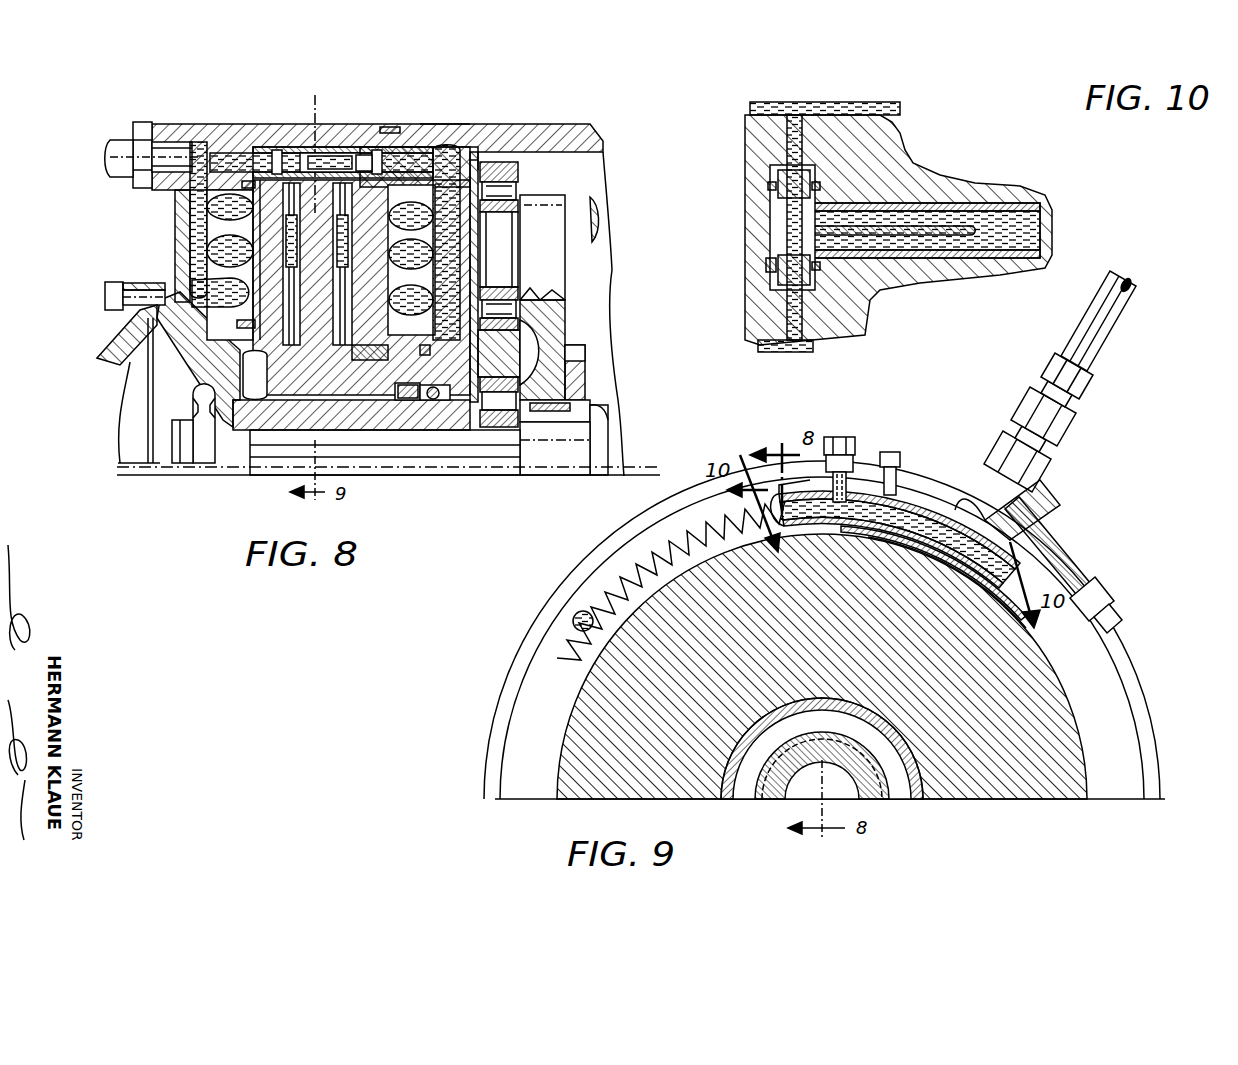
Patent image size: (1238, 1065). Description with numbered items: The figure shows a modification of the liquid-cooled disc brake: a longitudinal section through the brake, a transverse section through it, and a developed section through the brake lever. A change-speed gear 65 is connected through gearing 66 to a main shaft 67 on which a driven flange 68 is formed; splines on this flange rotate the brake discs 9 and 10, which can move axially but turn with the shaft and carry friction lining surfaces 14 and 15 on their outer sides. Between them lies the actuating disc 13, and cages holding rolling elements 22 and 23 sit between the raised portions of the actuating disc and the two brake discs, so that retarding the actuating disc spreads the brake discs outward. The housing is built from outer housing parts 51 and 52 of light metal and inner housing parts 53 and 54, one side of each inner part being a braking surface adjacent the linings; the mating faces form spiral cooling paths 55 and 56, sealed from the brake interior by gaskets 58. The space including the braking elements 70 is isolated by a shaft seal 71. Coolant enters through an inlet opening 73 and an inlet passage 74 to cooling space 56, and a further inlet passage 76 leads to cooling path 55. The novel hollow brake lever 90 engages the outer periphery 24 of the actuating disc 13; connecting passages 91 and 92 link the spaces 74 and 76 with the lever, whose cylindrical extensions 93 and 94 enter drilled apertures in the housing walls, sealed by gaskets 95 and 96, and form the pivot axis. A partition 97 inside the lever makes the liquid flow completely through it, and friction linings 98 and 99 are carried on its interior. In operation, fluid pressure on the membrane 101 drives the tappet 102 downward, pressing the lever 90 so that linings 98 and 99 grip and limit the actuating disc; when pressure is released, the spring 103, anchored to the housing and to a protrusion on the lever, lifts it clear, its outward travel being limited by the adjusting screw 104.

In FIG. 8, the brake disc 9 is at (395, 392).
In FIG. 8, the brake disc 10 is at (290, 388).
In FIG. 8, the actuating disc 13 is at (282, 160).
In FIG. 9, the actuating disc 13 is at (1032, 680).
In FIG. 8, the friction lining surface 14 is at (375, 362).
In FIG. 8, the friction lining surface 15 is at (255, 375).
In FIG. 8, the rolling elements 22 is at (339, 264).
In FIG. 8, the rolling elements 23 is at (297, 264).
In FIG. 9, the outer periphery of the actuating disc 24 is at (1098, 730).
In FIG. 8, the outer housing part 51 is at (480, 130).
In FIG. 8, the outer housing part 52 is at (160, 130).
In FIG. 8, the inner housing part 53 is at (398, 175).
In FIG. 8, the inner housing part 54 is at (228, 230).
In FIG. 8, the spiral cooling path 55 is at (420, 254).
In FIG. 8, the spiral cooling path 56 is at (222, 249).
In FIG. 8, the gaskets 58 is at (412, 136).
In FIG. 8, the change-speed gear 65 is at (580, 130).
In FIG. 8, the gearing 66 is at (575, 310).
In FIG. 8, the main shaft 67 is at (540, 452).
In FIG. 8, the driven flange 68 is at (128, 333).
In FIG. 8, the space including the braking elements 70 is at (415, 433).
In FIG. 8, the shaft seal 71 is at (432, 400).
In FIG. 8, the inlet opening 73 is at (118, 140).
In FIG. 8, the inlet passage 74 is at (195, 150).
In FIG. 8, the inlet passage 76 is at (480, 163).
In FIG. 10, the brake lever 90 is at (1040, 235).
In FIG. 9, the brake lever 90 is at (850, 495).
In FIG. 8, the connecting passage 91 is at (222, 160).
In FIG. 10, the connecting passage 91 is at (800, 316).
In FIG. 8, the connecting passage 92 is at (450, 135).
In FIG. 10, the connecting passage 92 is at (798, 128).
In FIG. 8, the cylindrical extension 93 is at (270, 160).
In FIG. 10, the cylindrical extension 93 is at (780, 282).
In FIG. 8, the cylindrical extension 94 is at (350, 165).
In FIG. 10, the cylindrical extension 94 is at (780, 182).
In FIG. 8, the gasket 95 is at (292, 162).
In FIG. 10, the gasket 95 is at (785, 276).
In FIG. 8, the gasket 96 is at (372, 168).
In FIG. 10, the gasket 96 is at (815, 180).
In FIG. 10, the partition 97 is at (975, 230).
In FIG. 9, the friction lining 98 is at (915, 520).
In FIG. 9, the friction lining 99 is at (1055, 556).
In FIG. 9, the membrane 101 is at (1066, 394).
In FIG. 9, the tappet 102 is at (1020, 565).
In FIG. 9, the spring 103 is at (698, 540).
In FIG. 9, the adjusting screw 104 is at (838, 445).